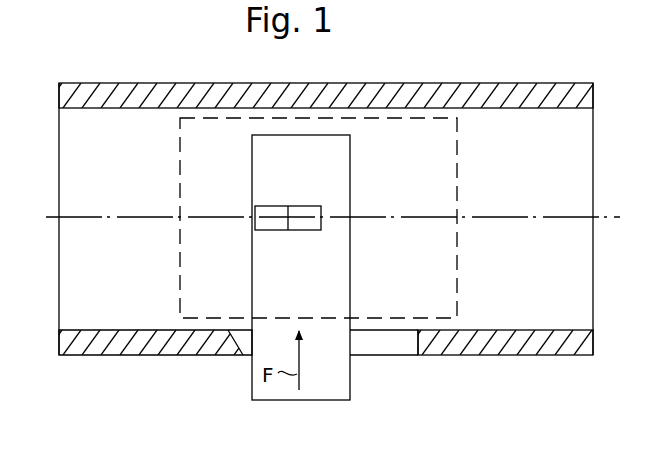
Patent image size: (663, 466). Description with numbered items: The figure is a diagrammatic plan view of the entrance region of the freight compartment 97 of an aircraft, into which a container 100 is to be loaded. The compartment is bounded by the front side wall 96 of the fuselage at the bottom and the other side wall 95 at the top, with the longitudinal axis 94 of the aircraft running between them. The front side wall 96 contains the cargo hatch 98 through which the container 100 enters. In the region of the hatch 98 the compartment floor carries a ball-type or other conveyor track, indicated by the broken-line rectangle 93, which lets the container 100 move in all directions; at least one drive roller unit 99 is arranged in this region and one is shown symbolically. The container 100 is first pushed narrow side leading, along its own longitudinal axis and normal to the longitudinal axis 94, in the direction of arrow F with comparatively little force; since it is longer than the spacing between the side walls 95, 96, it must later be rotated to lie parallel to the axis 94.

The conveyor track 93 is at (460, 171).
The longitudinal axis of the aircraft 94 is at (517, 219).
The side wall 95 is at (514, 93).
The front side wall 96 is at (515, 343).
The freight compartment 97 is at (114, 303).
The cargo hatch 98 is at (392, 340).
The drive roller unit 99 is at (291, 204).
The container 100 is at (343, 262).